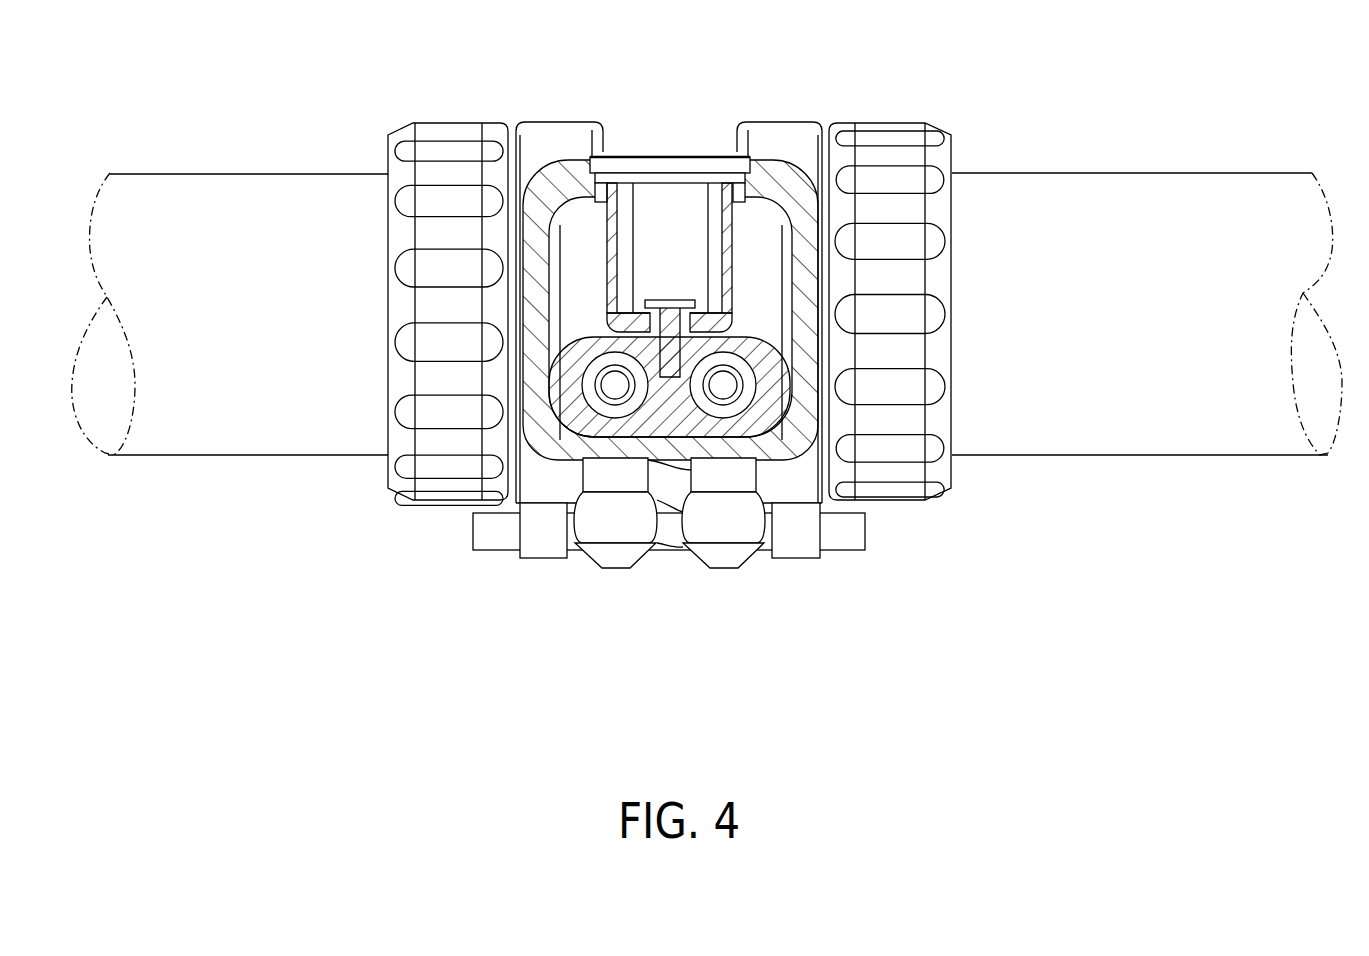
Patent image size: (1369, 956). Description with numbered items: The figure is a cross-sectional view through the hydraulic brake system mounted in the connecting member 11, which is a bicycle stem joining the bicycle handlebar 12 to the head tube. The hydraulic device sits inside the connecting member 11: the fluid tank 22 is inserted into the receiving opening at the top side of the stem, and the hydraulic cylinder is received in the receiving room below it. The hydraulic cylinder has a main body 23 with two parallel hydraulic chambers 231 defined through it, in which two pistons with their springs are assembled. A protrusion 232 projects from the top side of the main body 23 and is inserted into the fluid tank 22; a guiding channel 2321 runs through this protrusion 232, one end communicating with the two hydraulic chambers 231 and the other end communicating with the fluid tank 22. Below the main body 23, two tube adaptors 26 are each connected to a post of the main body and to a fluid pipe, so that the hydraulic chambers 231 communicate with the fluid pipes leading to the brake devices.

The connecting member 11 is at (773, 200).
The bicycle handlebar 12 is at (1118, 218).
The fluid tank 22 is at (635, 184).
The main body 23 is at (792, 325).
The tube adaptor 26 is at (607, 533).
The hydraulic chamber 231 is at (747, 397).
The protrusion 232 is at (643, 312).
The guiding channel 2321 is at (670, 310).